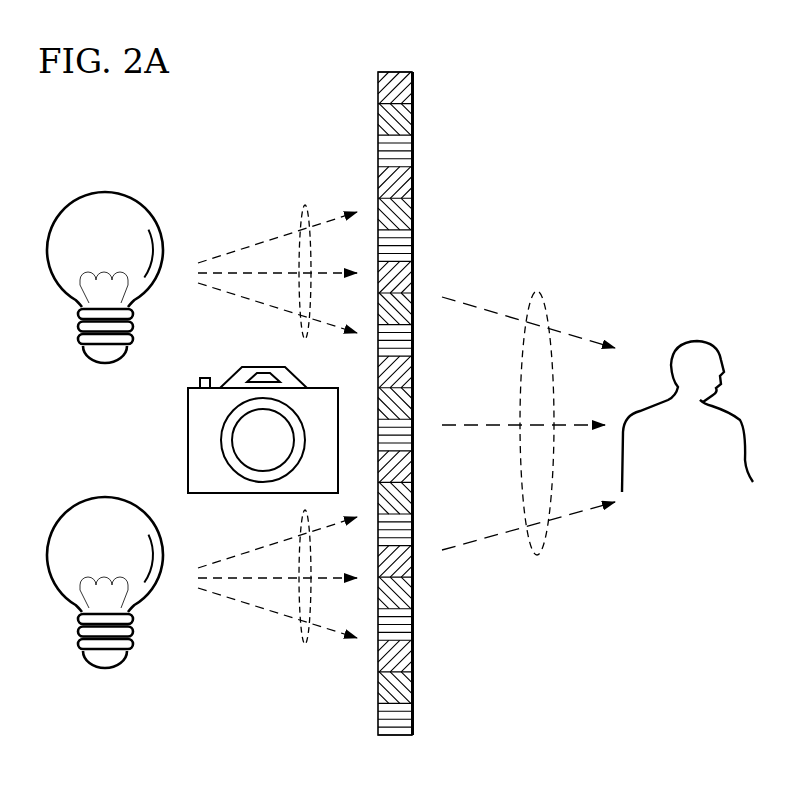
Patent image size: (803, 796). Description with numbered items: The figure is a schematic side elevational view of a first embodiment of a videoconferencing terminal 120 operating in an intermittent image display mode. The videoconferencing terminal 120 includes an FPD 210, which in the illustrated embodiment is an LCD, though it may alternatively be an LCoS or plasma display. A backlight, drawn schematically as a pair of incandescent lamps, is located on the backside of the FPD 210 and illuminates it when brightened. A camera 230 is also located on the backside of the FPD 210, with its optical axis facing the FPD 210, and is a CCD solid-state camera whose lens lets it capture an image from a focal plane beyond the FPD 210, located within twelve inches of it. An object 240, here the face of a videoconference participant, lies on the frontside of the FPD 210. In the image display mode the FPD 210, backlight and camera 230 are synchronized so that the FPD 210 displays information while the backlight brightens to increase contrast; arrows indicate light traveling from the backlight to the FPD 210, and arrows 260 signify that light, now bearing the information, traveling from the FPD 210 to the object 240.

The videoconferencing terminal 120 is at (513, 93).
The FPD 210 is at (414, 628).
The camera 230 is at (188, 440).
The object 240 is at (697, 341).
The arrows 260 is at (537, 292).